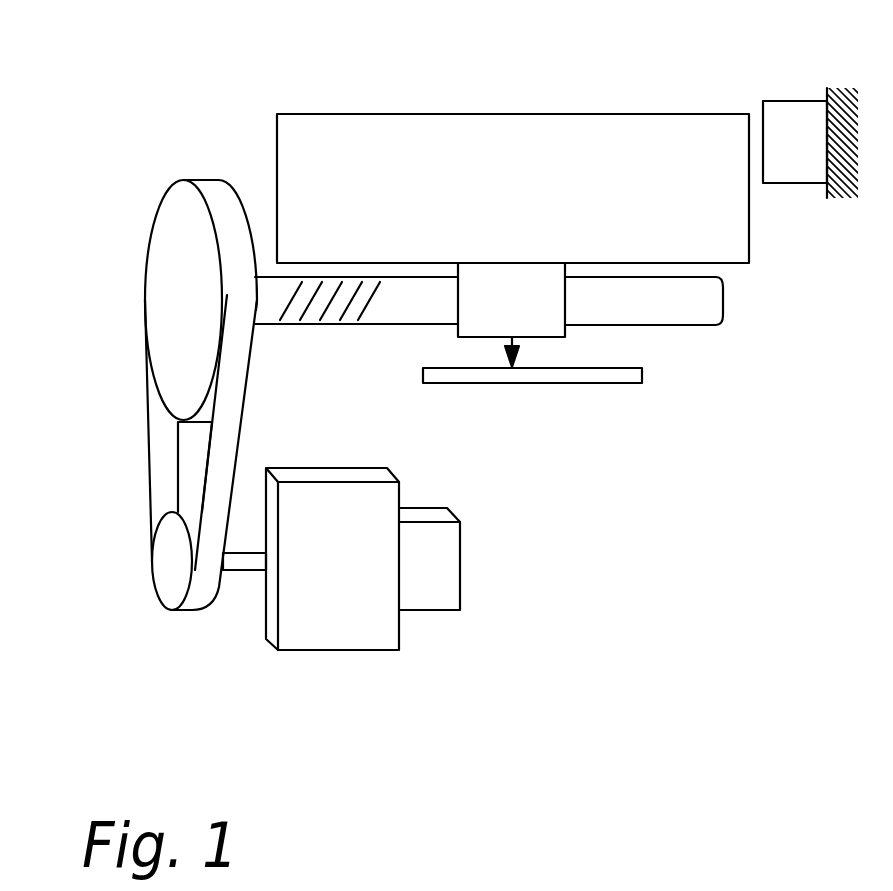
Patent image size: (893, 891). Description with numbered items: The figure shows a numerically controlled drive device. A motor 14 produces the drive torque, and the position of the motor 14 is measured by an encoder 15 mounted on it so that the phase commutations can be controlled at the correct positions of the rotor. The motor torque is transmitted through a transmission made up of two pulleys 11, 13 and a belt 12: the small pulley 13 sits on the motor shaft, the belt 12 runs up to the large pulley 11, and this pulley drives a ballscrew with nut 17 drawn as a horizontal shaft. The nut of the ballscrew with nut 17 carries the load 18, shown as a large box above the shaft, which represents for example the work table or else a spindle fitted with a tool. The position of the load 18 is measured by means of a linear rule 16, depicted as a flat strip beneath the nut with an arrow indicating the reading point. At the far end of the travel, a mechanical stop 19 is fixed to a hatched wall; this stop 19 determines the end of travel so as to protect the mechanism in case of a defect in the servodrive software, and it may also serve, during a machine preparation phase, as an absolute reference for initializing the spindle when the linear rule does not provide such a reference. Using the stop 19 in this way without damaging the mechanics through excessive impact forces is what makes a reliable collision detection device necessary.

The pulley 11 is at (164, 300).
The belt 12 is at (163, 460).
The pulley 13 is at (170, 546).
The motor 14 is at (368, 640).
The encoder 15 is at (451, 577).
The linear rule 16 is at (637, 378).
The ballscrew with nut 17 is at (703, 298).
The load 18 is at (724, 211).
The mechanical stop 19 is at (799, 110).